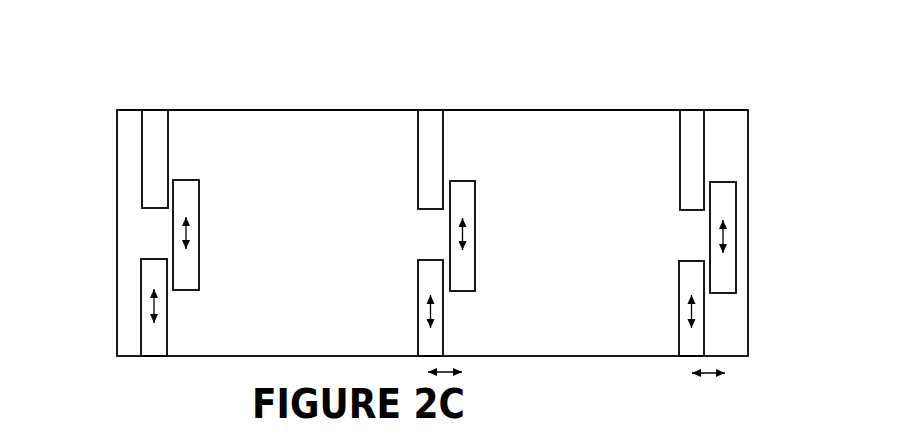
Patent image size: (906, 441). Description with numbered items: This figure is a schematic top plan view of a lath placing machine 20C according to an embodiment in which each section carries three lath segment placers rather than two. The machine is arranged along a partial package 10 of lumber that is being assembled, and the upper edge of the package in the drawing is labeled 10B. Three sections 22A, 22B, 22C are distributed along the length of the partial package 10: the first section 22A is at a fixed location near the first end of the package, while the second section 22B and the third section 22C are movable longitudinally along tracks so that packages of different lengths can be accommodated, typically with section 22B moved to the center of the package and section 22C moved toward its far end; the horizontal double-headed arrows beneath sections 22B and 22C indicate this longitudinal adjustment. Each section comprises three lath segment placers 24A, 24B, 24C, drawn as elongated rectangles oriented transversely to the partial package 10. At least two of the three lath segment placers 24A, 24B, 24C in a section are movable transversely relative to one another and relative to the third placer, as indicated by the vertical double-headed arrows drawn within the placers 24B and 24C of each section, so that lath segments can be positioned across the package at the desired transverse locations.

The lath placing machine 20C is at (178, 42).
The partial package 10 is at (352, 110).
The substrate second surface 10B is at (504, 110).
The first section 22A is at (178, 85).
The second section 22B is at (420, 72).
The third section 22C is at (690, 96).
The lath segment placer 24A is at (142, 158).
The lath segment placer 24B is at (173, 233).
The lath segment placer 24C is at (141, 306).